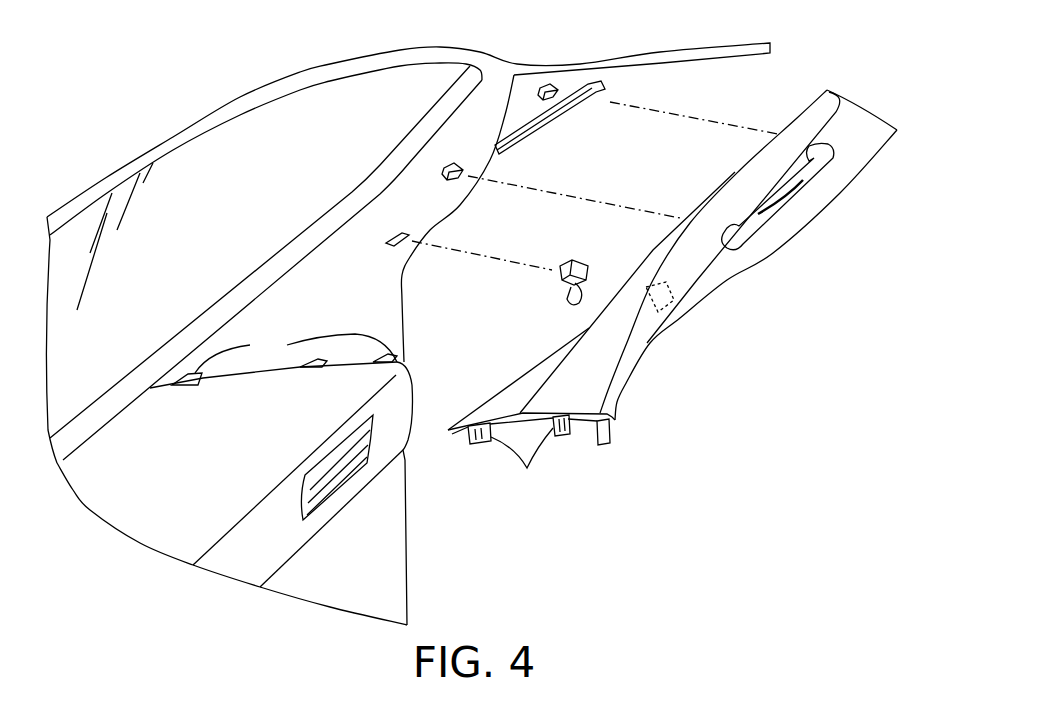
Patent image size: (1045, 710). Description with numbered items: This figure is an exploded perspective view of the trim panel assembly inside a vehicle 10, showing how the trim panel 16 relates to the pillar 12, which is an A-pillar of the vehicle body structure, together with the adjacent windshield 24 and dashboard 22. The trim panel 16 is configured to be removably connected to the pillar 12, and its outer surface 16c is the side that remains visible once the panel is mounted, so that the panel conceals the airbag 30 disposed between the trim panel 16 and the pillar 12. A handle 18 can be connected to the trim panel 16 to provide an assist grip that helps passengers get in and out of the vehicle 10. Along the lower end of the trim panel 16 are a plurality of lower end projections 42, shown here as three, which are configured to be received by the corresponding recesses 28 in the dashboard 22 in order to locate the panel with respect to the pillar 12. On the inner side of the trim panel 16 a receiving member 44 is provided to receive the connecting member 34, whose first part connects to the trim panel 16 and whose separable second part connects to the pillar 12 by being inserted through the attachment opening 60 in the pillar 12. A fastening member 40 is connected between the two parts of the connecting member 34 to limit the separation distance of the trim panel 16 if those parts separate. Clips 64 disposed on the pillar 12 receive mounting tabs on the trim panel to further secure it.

The vehicle 10 is at (128, 96).
The pillar 12 is at (432, 102).
The trim panel 16 is at (665, 358).
The outer surface 16c is at (842, 130).
The handle 18 is at (808, 199).
The dashboard 22 is at (263, 547).
The windshield 24 is at (227, 162).
The recesses 28 is at (273, 359).
The airbag 30 is at (526, 138).
The connecting member 34 is at (546, 292).
The fastening member 40 is at (572, 308).
The lower end projections 42 is at (600, 432).
The receiving member 44 is at (641, 264).
The attachment opening 60 is at (390, 236).
The clips 64 is at (452, 163).